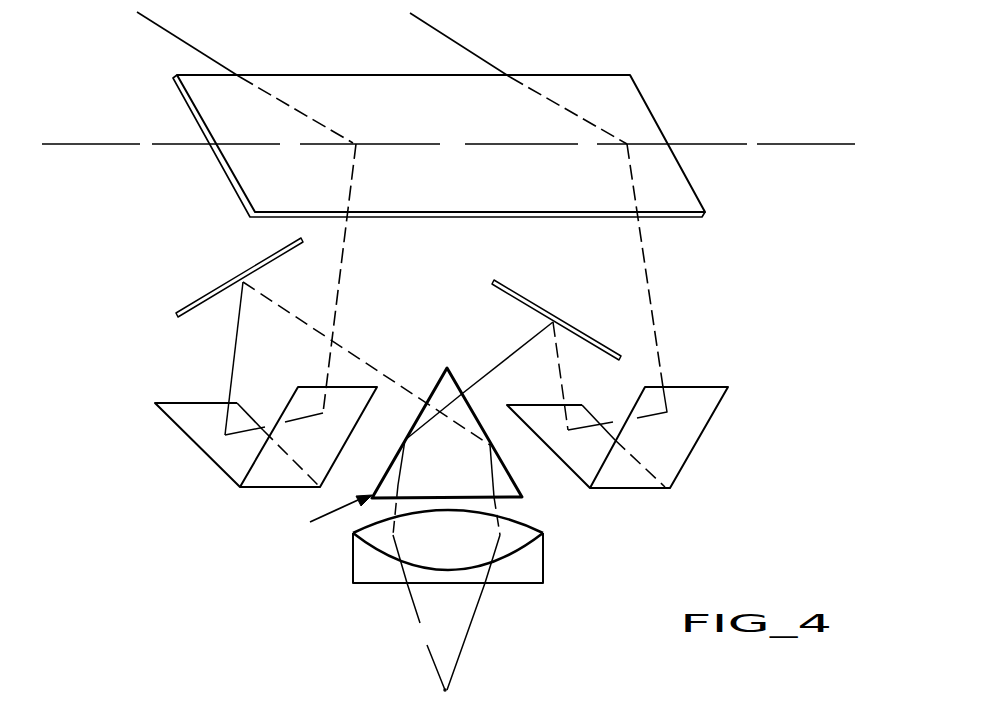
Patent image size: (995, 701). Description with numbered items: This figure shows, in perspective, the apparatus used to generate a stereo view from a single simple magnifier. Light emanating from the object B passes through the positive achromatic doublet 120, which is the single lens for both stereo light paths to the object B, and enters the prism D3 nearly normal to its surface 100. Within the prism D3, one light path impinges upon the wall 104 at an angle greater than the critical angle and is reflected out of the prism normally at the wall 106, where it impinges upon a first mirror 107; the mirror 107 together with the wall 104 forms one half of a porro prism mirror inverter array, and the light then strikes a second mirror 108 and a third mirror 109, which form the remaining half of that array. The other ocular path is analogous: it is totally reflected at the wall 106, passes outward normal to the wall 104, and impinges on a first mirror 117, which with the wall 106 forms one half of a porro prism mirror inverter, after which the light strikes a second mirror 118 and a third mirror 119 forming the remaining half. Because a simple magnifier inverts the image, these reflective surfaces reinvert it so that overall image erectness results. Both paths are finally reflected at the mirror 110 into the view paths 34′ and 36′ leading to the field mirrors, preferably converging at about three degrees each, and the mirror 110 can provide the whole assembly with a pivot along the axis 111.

The mirror 110 is at (658, 85).
The axis 111 is at (772, 143).
The light path 36′ is at (195, 43).
The view path 34′ is at (463, 43).
The first mirror 117 is at (205, 296).
The first mirror 107 is at (518, 293).
The second mirror 118 is at (193, 420).
The third mirror 119 is at (272, 470).
The second mirror 108 is at (570, 490).
The third mirror 109 is at (672, 443).
The wall 104 is at (432, 390).
The wall 106 is at (447, 412).
The prism surface 100 is at (353, 558).
The positive achromatic doublet 120 is at (528, 538).
The object B is at (443, 690).
The prism D3 is at (325, 529).